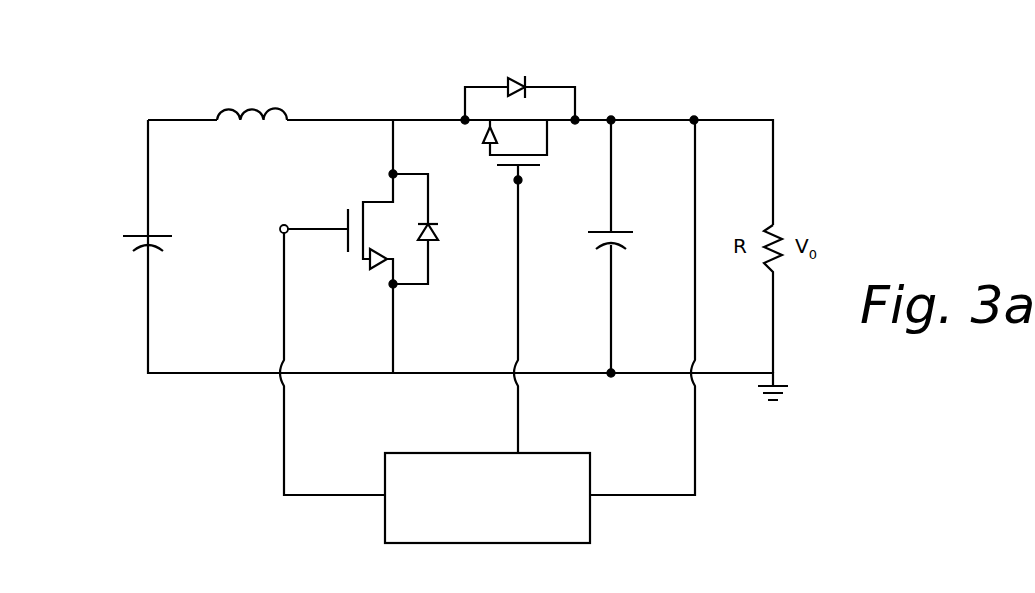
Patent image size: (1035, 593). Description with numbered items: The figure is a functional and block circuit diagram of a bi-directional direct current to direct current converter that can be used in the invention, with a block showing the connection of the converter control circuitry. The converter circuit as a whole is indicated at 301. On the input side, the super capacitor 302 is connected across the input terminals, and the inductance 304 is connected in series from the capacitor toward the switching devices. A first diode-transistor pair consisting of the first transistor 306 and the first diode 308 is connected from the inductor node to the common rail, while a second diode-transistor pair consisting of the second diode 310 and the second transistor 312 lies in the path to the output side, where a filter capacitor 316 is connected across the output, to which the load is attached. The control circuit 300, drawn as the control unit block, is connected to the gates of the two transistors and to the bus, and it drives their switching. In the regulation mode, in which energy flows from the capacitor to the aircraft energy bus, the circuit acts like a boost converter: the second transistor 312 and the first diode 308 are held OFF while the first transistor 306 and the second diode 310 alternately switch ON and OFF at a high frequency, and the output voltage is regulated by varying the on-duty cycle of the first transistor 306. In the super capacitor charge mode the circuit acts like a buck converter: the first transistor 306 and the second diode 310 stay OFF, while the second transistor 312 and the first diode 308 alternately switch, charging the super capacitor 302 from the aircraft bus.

The control circuit 300 is at (591, 525).
The converter circuit 301 is at (760, 93).
The super capacitor 302 is at (136, 234).
The inductance 304 is at (287, 116).
The transistor T1 306 is at (346, 212).
The diode D1 308 is at (435, 223).
The diode D2 310 is at (528, 86).
The transistor T2 312 is at (535, 178).
The filter capacitor CF 316 is at (626, 230).